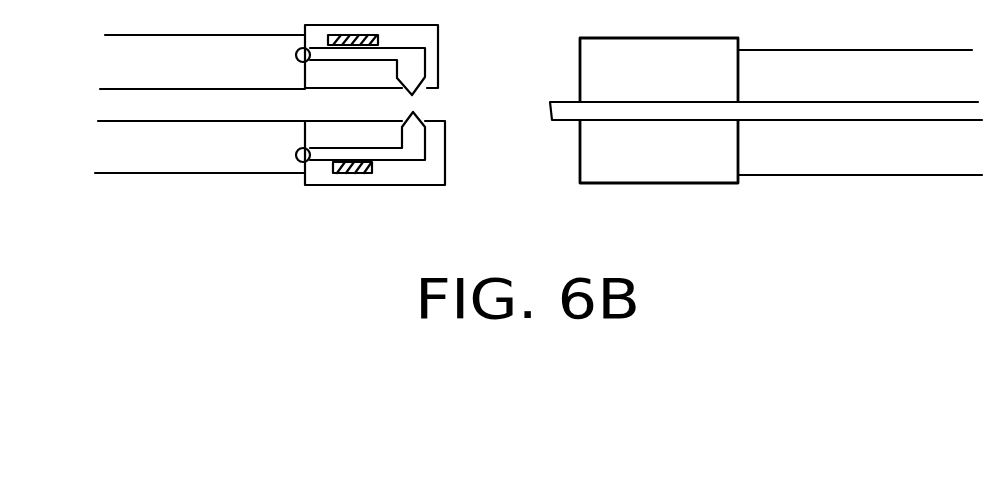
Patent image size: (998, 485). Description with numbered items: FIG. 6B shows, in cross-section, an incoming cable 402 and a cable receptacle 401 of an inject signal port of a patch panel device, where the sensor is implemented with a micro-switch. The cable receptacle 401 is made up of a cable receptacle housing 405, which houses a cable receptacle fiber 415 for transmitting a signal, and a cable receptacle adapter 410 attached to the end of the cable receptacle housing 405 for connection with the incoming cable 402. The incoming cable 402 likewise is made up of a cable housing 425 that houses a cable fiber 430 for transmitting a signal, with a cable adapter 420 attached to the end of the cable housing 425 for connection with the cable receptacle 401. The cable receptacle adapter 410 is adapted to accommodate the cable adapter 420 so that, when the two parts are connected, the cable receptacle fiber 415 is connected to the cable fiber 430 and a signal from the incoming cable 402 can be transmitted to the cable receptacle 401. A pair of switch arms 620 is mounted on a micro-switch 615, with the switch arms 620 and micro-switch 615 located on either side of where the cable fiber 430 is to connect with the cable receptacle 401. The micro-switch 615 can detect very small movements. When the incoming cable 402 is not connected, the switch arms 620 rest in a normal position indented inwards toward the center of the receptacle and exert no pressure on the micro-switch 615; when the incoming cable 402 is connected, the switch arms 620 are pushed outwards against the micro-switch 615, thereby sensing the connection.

The cable receptacle 401 is at (224, 221).
The incoming cable 402 is at (763, 220).
The cable receptacle housing 405 is at (197, 43).
The cable receptacle adapter 410 is at (315, 28).
The cable receptacle fiber 415 is at (172, 98).
The cable adapter 420 is at (645, 50).
The cable housing 425 is at (827, 58).
The cable fiber 430 is at (567, 103).
The micro-switch 615 is at (378, 41).
The switch arms 620 is at (418, 60).